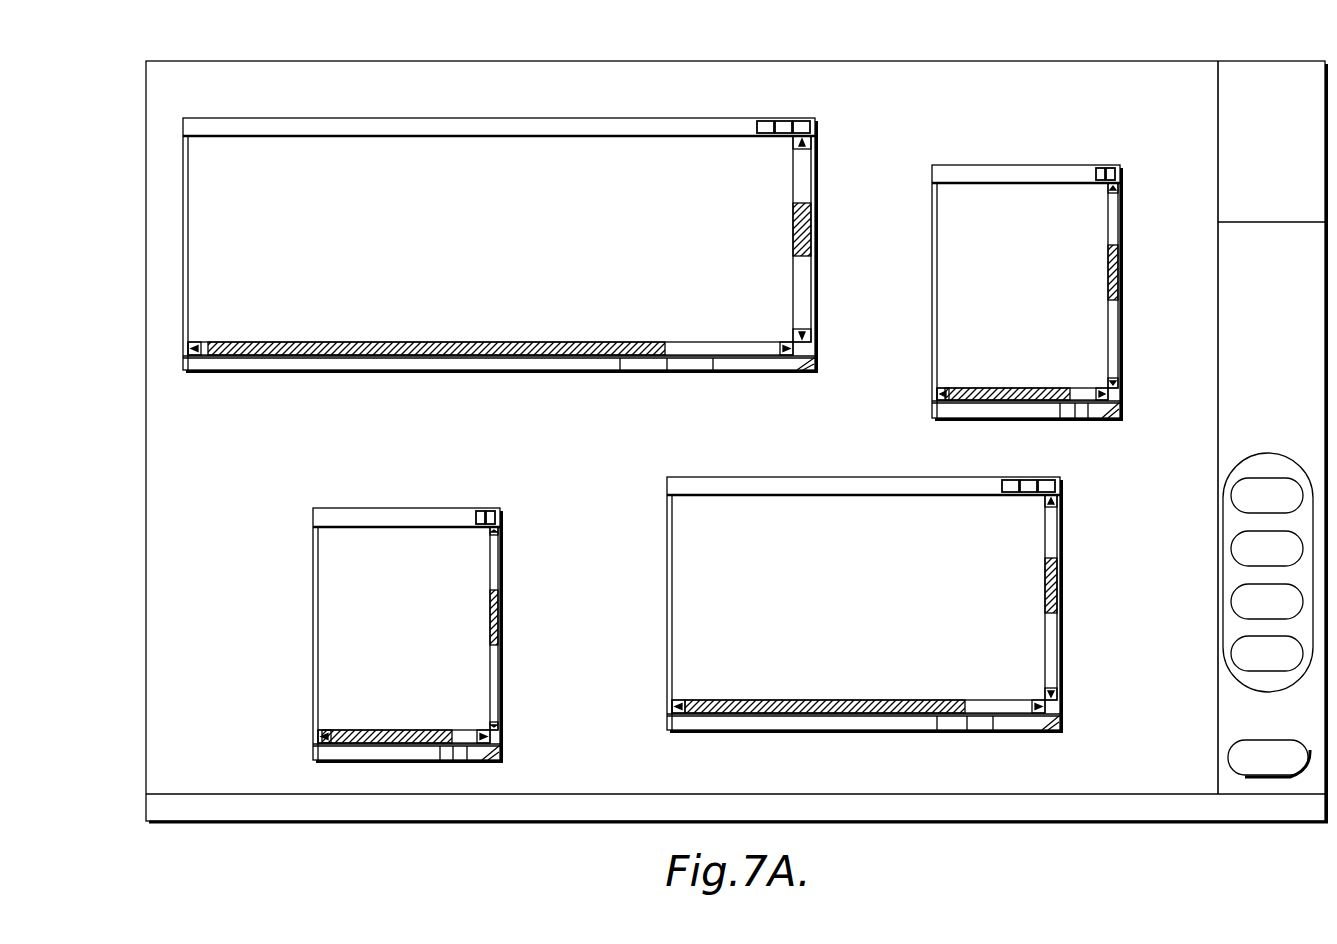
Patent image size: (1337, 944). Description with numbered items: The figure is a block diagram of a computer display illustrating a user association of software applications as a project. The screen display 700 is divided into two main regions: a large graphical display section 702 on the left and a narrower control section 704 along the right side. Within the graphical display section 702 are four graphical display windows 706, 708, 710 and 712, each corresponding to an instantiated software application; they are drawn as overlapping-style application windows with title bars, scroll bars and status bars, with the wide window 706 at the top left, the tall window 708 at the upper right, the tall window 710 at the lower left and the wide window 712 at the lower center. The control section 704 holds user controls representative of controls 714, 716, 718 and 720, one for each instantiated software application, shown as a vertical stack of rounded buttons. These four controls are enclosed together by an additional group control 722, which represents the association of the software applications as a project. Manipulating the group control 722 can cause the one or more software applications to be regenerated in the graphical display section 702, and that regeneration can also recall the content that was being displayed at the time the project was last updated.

The screen display 700 is at (160, 53).
The graphical display section 702 is at (1183, 99).
The control section 704 is at (1290, 100).
The graphical display window 706 is at (500, 254).
The graphical display window 708 is at (1050, 304).
The graphical display window 710 is at (416, 642).
The graphical display window 712 is at (882, 611).
The control 714 is at (1267, 495).
The control 716 is at (1267, 548).
The control 718 is at (1267, 601).
The control 720 is at (1267, 653).
The group control 722 is at (1262, 693).